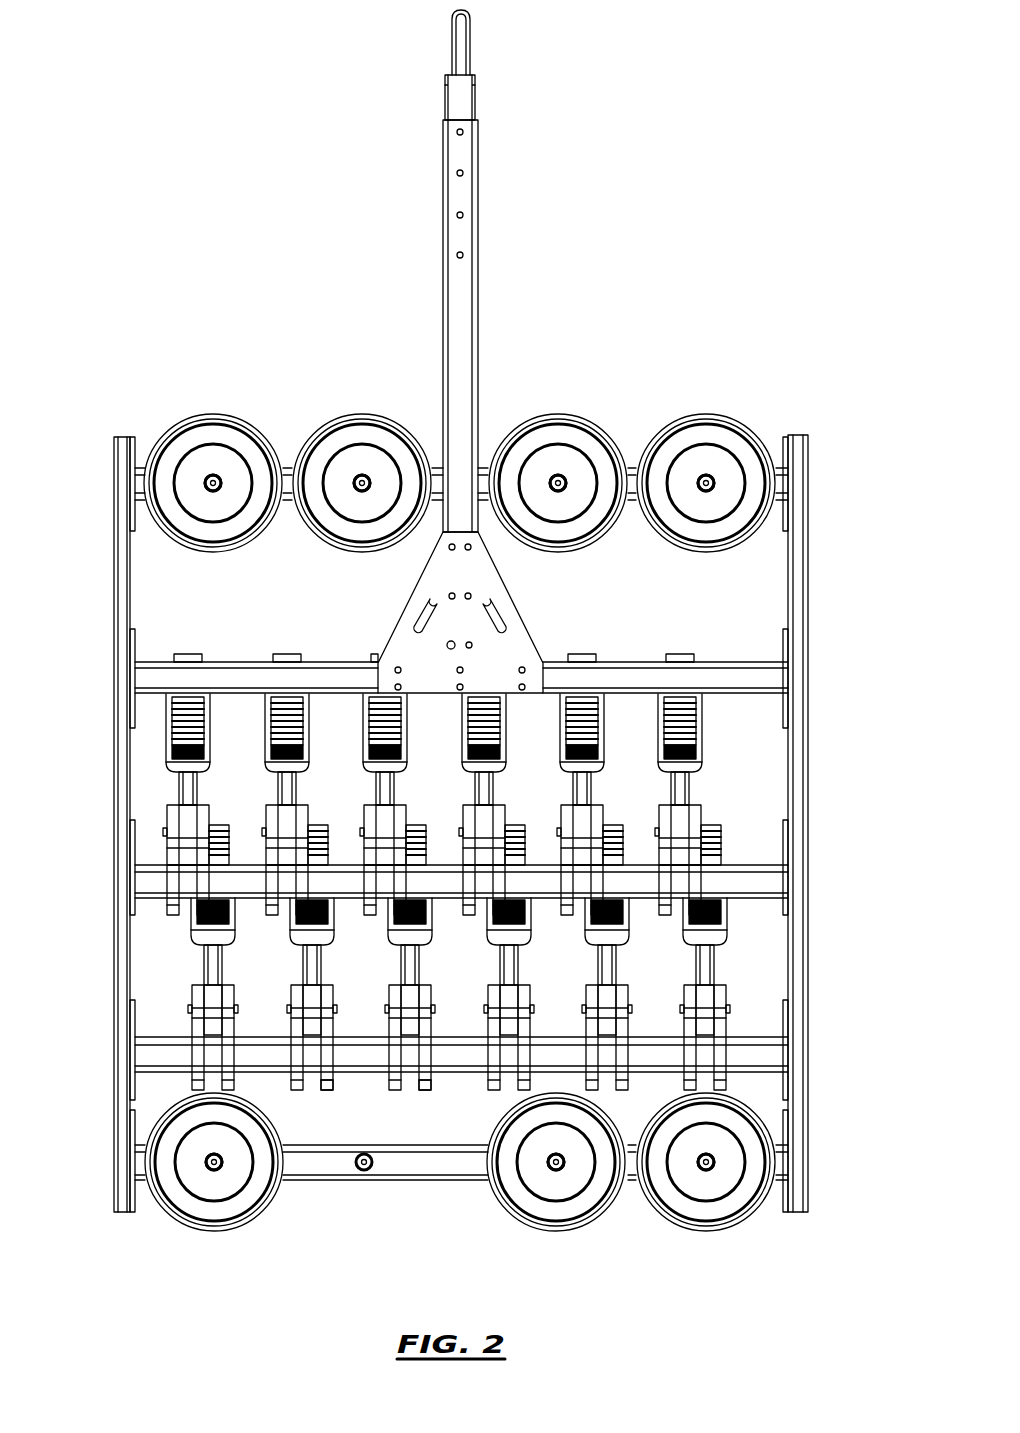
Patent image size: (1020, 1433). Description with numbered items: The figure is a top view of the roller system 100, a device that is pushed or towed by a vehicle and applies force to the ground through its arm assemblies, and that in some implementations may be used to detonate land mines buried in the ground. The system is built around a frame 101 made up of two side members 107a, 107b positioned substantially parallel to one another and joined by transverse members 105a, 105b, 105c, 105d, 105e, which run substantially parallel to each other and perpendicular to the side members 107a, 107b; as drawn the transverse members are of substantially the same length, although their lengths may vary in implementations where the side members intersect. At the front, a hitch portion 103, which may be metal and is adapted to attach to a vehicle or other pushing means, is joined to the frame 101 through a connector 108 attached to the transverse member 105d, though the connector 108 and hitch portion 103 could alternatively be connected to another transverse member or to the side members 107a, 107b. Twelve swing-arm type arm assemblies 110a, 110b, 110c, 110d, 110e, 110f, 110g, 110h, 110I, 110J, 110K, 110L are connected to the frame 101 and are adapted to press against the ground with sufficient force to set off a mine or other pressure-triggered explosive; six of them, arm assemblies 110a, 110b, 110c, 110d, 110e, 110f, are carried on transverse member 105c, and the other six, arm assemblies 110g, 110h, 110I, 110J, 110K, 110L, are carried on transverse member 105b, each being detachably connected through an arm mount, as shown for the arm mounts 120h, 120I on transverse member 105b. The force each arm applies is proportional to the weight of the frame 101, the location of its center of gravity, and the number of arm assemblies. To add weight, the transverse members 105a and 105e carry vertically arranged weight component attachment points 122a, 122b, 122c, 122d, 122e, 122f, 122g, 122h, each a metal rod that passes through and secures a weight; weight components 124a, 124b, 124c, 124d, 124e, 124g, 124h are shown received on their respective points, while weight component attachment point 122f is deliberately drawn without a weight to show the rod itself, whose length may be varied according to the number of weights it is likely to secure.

The roller system 100 is at (105, 84).
The frame 101 is at (98, 567).
The hitch portion 103 is at (445, 120).
The transverse member 105a is at (133, 1162).
The transverse member 105b is at (133, 1048).
The transverse member 105c is at (133, 883).
The transverse member 105d is at (133, 677).
The transverse member 105e is at (133, 485).
The side member 107a is at (124, 819).
The side member 107b is at (800, 975).
The connector 108 is at (400, 642).
The arm assembly 110a is at (213, 804).
The arm assembly 110b is at (313, 804).
The arm assembly 110c is at (410, 804).
The arm assembly 110d is at (510, 804).
The arm assembly 110e is at (608, 804).
The arm assembly 110f is at (703, 804).
The arm assembly 110g is at (185, 994).
The arm assembly 110h is at (288, 994).
The arm assembly 110I is at (387, 994).
The arm assembly 110J is at (484, 994).
The arm assembly 110K is at (582, 994).
The arm assembly 110L is at (681, 994).
The arm mount 120h is at (345, 1080).
The arm mount 120I is at (440, 1082).
The weight component attachment point 122a is at (213, 478).
The weight component attachment point 122b is at (362, 478).
The weight component attachment point 122c is at (558, 478).
The weight component attachment point 122d is at (706, 478).
The weight component attachment point 122e is at (213, 1168).
The weight component attachment point 122f is at (363, 1170).
The weight component attachment point 122g is at (554, 1168).
The weight component attachment point 122h is at (704, 1168).
The weight component 124a is at (250, 418).
The weight component 124b is at (398, 418).
The weight component 124c is at (532, 418).
The weight component 124d is at (692, 418).
The weight component 124e is at (240, 1220).
The weight component 124g is at (490, 1195).
The weight component 124h is at (640, 1195).